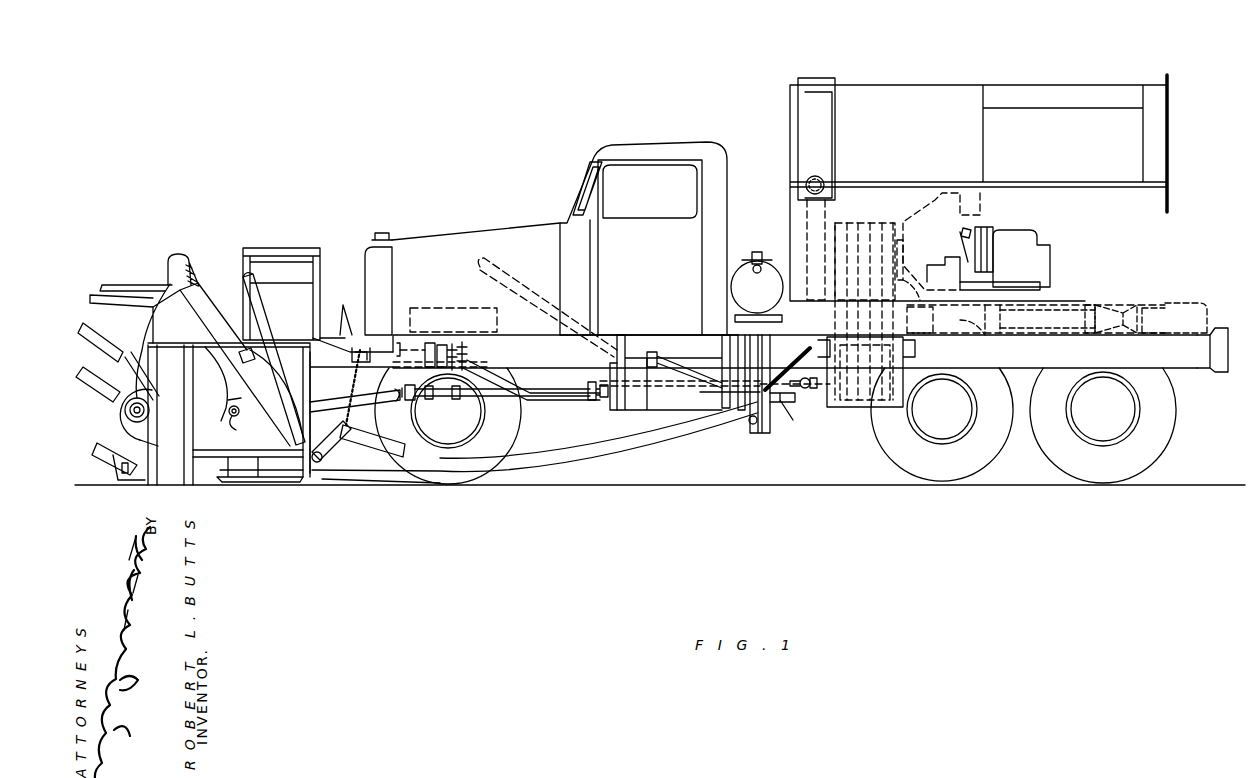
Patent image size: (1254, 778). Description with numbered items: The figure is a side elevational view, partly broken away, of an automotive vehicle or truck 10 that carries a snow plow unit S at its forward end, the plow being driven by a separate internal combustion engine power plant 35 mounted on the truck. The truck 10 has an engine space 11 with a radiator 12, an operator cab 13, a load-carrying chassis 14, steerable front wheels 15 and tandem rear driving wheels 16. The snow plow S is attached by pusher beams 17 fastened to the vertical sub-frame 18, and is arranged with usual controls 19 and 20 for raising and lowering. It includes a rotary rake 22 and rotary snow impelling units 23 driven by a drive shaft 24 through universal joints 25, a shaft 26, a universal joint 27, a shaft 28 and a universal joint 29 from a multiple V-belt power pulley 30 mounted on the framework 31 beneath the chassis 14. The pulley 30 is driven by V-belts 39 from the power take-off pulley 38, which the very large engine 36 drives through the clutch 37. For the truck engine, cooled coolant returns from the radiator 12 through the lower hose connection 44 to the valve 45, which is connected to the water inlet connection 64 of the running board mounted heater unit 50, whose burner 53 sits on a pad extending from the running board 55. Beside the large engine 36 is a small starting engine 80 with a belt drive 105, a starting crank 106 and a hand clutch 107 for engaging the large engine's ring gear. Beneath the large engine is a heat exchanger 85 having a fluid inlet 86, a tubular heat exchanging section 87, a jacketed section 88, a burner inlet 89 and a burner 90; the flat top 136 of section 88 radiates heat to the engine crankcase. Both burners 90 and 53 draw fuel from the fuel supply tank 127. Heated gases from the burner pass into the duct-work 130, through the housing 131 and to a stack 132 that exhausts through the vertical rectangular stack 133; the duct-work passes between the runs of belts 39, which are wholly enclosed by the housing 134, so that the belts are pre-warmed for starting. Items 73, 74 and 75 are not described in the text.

The snow plow unit S is at (224, 228).
The automotive vehicle or truck 10 is at (513, 218).
The engine space 11 is at (448, 247).
The radiator 12 is at (380, 256).
The operator cab 13 is at (651, 148).
The load-carrying chassis 14 is at (1182, 362).
The steerable front wheels 15 is at (510, 438).
The tandem rear driving wheels 16 is at (1062, 455).
The pusher beams 17 is at (545, 457).
The vertical sub-frame 18 is at (766, 432).
The controls 19 is at (370, 443).
The controls 20 is at (350, 379).
The rotary rake 22 is at (112, 447).
The rotary snow impelling units 23 is at (238, 418).
The drive shaft 24 is at (334, 408).
The universal joints 25 is at (410, 396).
The shaft 26 is at (450, 394).
The universal joint 27 is at (598, 398).
The shaft 28 is at (682, 392).
The universal joint 29 is at (805, 390).
The multiple V-belt power pulley 30 is at (860, 400).
The framework 31 is at (905, 385).
The internal combustion engine power plant 35 is at (1182, 178).
The engine 36 is at (978, 193).
The clutch 37 is at (937, 207).
The multiple V-belt power take-off pulley 38 is at (883, 223).
The V-belts 39 is at (847, 223).
The lower hose connection 44 is at (400, 350).
The valve 45 is at (467, 368).
The heater unit 50 is at (707, 404).
The burner 53 is at (782, 400).
The running board 55 is at (657, 410).
The water inlet connection 64 is at (552, 402).
The control valve 73 is at (660, 356).
The control rod 74 is at (593, 345).
The hydraulic line 75 is at (490, 350).
The small internal combustion engine 80 is at (1015, 237).
The heat exchanger 85 is at (1069, 345).
The fluid inlet 86 is at (973, 333).
The heat exchanging section 87 is at (993, 333).
The heat exchanging section 88 is at (1032, 333).
The burner inlet 89 is at (1120, 308).
The burner 90 is at (1193, 308).
The belt drive 105 is at (984, 227).
The starting crank 106 is at (940, 262).
The hand clutch 107 is at (963, 232).
The fuel supply tank 127 is at (738, 278).
The duct-work 130 is at (937, 333).
The housing 131 is at (906, 285).
The stack 132 is at (803, 214).
The vertical rectangular stack 133 is at (820, 110).
The housing 134 is at (833, 323).
The top 136 is at (1087, 303).